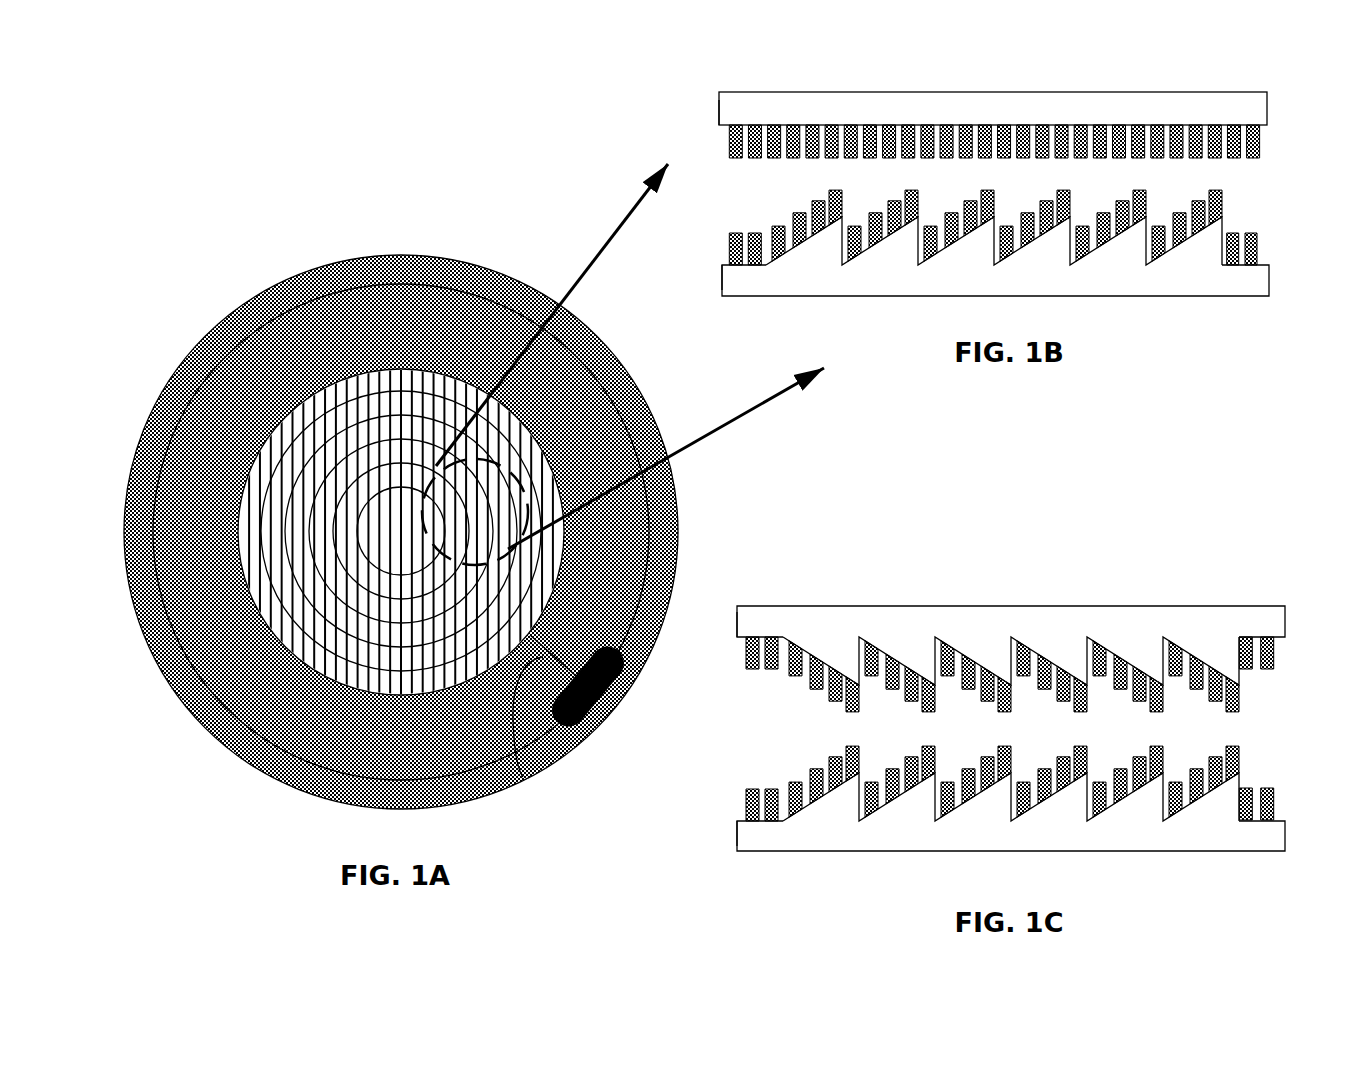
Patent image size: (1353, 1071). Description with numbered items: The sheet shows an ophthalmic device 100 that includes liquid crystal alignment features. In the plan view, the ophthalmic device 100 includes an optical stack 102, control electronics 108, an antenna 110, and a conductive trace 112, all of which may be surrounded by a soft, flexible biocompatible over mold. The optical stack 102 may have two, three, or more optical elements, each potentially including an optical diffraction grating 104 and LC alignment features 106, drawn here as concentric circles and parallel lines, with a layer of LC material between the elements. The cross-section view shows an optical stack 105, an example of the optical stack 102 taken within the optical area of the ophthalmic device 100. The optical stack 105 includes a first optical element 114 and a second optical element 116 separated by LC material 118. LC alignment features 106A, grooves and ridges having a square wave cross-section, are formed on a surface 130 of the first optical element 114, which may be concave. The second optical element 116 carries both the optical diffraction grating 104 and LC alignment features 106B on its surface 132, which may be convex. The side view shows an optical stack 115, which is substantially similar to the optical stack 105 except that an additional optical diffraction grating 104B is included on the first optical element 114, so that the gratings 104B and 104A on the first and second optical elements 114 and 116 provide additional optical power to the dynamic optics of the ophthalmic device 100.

In FIG. 1A, the ophthalmic device 100 is at (450, 478).
In FIG. 1A, the optical stack 102 is at (170, 377).
In FIG. 1A, the optical diffraction grating 104 is at (315, 417).
In FIG. 1B, the optical diffraction grating 104 is at (1227, 226).
In FIG. 1A, the LC alignment features 106 is at (375, 378).
In FIG. 1A, the control electronics 108 is at (597, 698).
In FIG. 1A, the antenna 110 is at (651, 521).
In FIG. 1A, the conductive trace 112 is at (523, 777).
In FIG. 1B, the optical stack 105 is at (983, 175).
In FIG. 1C, the optical stack 115 is at (1011, 713).
In FIG. 1B, the first optical element 114 is at (1045, 91).
In FIG. 1C, the first optical element 114 is at (1055, 606).
In FIG. 1B, the second optical element 116 is at (1120, 297).
In FIG. 1C, the second optical element 116 is at (1104, 852).
In FIG. 1B, the LC material 118 is at (954, 182).
In FIG. 1C, the LC material 118 is at (1025, 727).
In FIG. 1B, the surface 130 is at (716, 126).
In FIG. 1C, the surface 130 is at (740, 640).
In FIG. 1B, the surface 132 is at (720, 263).
In FIG. 1C, the surface 132 is at (738, 815).
In FIG. 1C, the optical diffraction grating 104A is at (1240, 693).
In FIG. 1C, the optical diffraction grating 104B is at (1247, 765).
In FIG. 1B, the LC alignment features 106A is at (1214, 159).
In FIG. 1C, the LC alignment features 106A is at (1266, 674).
In FIG. 1B, the LC alignment features 106B is at (1224, 194).
In FIG. 1C, the LC alignment features 106B is at (1268, 783).